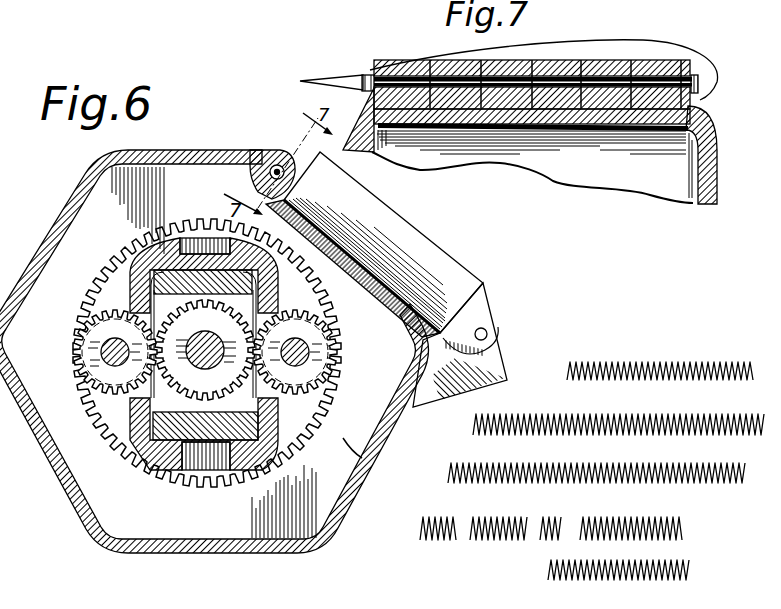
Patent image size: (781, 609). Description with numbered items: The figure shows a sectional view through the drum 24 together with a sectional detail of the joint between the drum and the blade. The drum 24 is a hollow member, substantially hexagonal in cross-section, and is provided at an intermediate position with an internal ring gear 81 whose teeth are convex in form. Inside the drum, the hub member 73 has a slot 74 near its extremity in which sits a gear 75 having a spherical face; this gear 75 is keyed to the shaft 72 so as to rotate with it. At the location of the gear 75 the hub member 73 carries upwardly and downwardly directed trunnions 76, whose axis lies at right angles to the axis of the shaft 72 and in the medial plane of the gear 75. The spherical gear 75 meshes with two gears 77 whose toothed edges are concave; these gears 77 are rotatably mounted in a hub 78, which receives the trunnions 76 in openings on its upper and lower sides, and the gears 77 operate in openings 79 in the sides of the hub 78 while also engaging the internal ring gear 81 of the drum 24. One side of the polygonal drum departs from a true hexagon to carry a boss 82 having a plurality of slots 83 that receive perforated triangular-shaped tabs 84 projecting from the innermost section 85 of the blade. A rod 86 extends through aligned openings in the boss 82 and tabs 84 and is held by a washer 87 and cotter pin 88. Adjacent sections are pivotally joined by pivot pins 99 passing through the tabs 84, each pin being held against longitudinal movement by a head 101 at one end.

In FIG. 6, the drum 24 is at (52, 232).
In FIG. 7, the drum 24 is at (718, 163).
In FIG. 6, the shaft 72 is at (205, 362).
In FIG. 6, the hub member 73 is at (147, 453).
In FIG. 6, the slot 74 is at (163, 402).
In FIG. 6, the gear 75 is at (233, 320).
In FIG. 6, the trunnions 76 is at (208, 238).
In FIG. 6, the gears 77 is at (74, 352).
In FIG. 6, the hub 78 is at (167, 427).
In FIG. 6, the openings 79 is at (132, 309).
In FIG. 6, the internal ring gear 81 is at (343, 438).
In FIG. 6, the boss 82 is at (259, 154).
In FIG. 7, the boss 82 is at (559, 62).
In FIG. 7, the slots 83 is at (447, 131).
In FIG. 6, the tabs 84 is at (298, 160).
In FIG. 7, the tabs 84 is at (536, 104).
In FIG. 6, the innermost section 85 is at (423, 247).
In FIG. 7, the innermost section 85 is at (647, 47).
In FIG. 6, the rod 86 is at (279, 163).
In FIG. 7, the rod 86 is at (603, 82).
In FIG. 7, the washer 87 is at (371, 75).
In FIG. 7, the cotter pin 88 is at (361, 78).
In FIG. 6, the pivot pins 99 is at (489, 333).
In FIG. 7, the head 101 is at (699, 75).